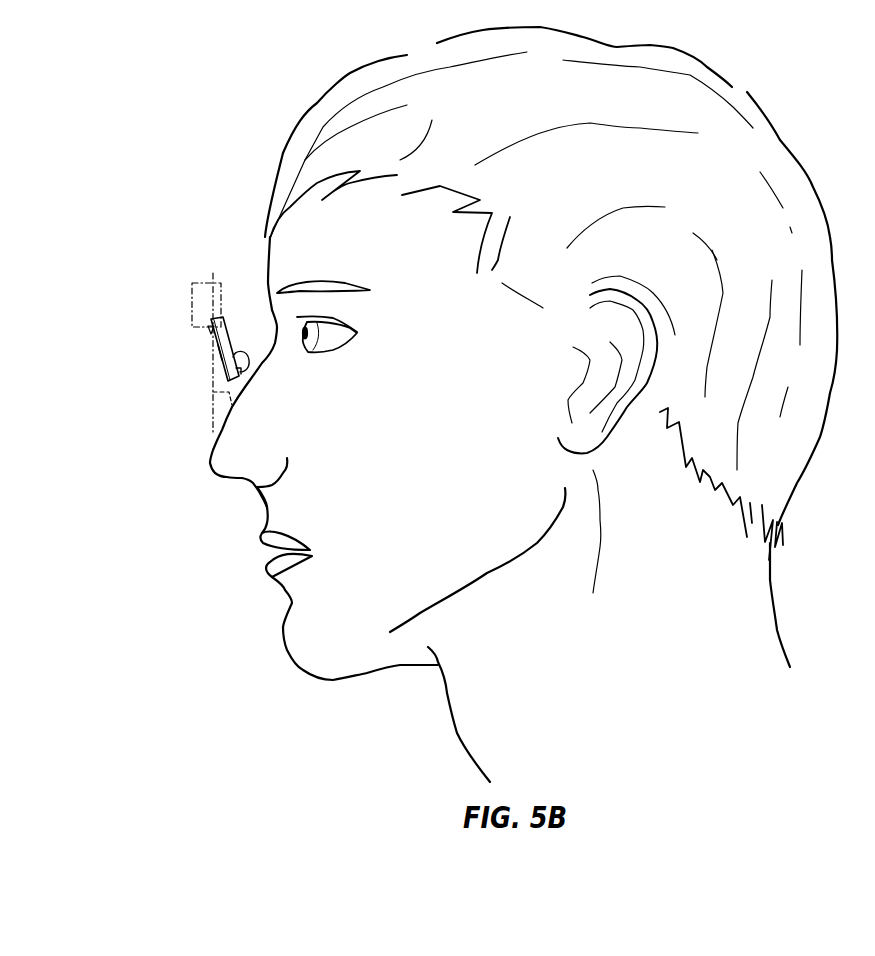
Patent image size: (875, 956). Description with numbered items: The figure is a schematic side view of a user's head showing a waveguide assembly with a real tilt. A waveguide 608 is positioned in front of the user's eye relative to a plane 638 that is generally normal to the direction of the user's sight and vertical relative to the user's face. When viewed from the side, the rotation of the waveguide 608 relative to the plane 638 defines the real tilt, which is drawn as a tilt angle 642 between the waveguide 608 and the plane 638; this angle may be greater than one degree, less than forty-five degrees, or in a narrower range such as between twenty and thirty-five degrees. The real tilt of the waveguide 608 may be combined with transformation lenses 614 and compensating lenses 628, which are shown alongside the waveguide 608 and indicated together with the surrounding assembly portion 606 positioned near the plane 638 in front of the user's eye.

The frame portion 606 is at (192, 292).
The transformation lenses 614 is at (210, 330).
The waveguide 608 is at (218, 347).
The compensating lenses 628 is at (221, 357).
The tilt angle 642 is at (213, 395).
The plane 638 is at (212, 418).